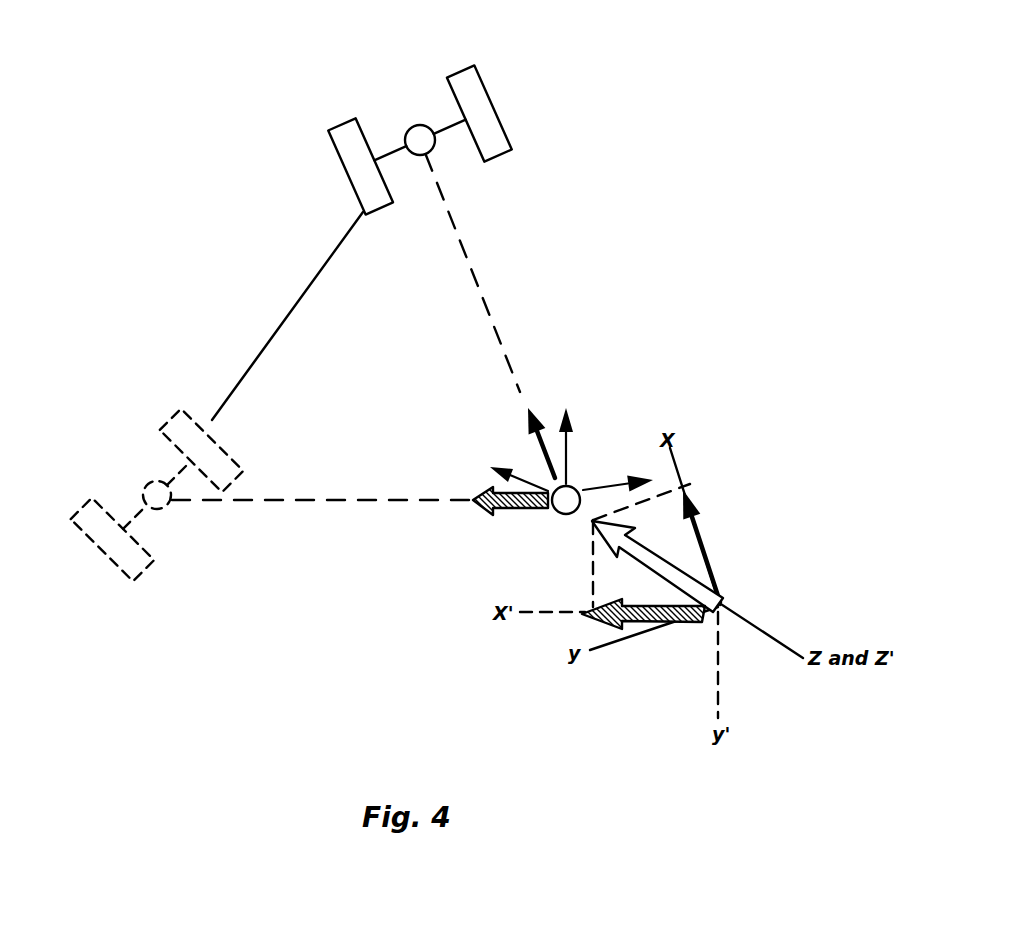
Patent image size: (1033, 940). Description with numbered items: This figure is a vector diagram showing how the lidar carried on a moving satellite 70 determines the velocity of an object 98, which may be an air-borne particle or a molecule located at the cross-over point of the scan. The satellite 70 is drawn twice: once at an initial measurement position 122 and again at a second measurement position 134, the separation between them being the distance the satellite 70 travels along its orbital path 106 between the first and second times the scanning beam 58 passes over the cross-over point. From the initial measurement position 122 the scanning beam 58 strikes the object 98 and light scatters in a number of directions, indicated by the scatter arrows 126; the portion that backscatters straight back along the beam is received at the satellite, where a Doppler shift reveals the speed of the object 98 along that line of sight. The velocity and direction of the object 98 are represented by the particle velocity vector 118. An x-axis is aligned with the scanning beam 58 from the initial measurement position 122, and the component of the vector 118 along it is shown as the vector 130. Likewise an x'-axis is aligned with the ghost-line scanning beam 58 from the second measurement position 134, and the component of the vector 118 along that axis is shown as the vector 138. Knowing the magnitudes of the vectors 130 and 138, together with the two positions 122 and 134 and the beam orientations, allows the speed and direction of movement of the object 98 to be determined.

The initial measurement position 122 is at (408, 122).
The satellite 70 is at (485, 106).
The second measurement position 134 is at (140, 477).
The scanning beam 58 is at (470, 257).
The orbital path 106 is at (282, 320).
The object 98 is at (568, 498).
The scatter arrows 126 is at (568, 445).
The x-axis component vector 130 is at (540, 417).
The x'-axis component vector 138 is at (517, 510).
The particle velocity vector 118 is at (663, 568).